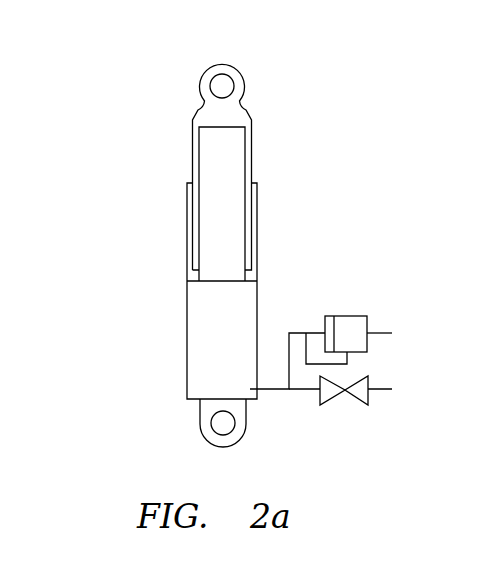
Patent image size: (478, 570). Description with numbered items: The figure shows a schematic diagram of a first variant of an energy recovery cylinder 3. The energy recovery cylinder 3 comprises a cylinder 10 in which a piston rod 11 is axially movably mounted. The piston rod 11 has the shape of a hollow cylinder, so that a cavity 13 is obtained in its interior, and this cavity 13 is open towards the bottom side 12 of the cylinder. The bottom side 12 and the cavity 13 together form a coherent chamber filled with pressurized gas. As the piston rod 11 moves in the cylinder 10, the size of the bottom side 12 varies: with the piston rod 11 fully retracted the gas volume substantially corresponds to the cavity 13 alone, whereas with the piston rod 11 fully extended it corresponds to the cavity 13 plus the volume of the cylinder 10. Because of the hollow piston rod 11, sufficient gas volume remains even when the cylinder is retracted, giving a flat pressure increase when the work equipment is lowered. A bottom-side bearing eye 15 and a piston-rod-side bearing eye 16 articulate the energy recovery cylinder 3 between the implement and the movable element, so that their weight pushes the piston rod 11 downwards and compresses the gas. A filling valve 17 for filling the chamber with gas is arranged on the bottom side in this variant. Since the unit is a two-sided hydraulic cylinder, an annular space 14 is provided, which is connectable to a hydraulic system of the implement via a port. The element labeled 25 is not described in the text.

The energy recovery cylinder 3 is at (75, 441).
The cylinder 10 is at (188, 348).
The piston rod 11 is at (246, 153).
The bottom side 12 is at (247, 343).
The cavity 13 is at (223, 228).
The annular space 14 is at (190, 223).
The bottom-side bearing eye 15 is at (222, 421).
The piston-rod-side bearing eye 16 is at (230, 80).
The filling valve 17 is at (350, 393).
The piston rod 25 is at (258, 193).